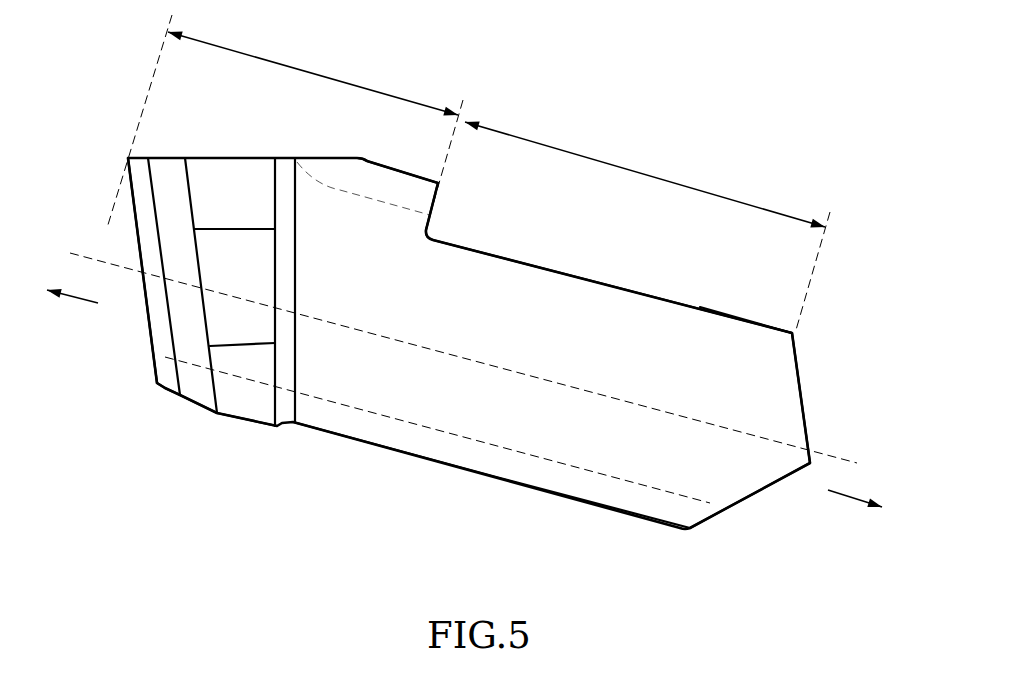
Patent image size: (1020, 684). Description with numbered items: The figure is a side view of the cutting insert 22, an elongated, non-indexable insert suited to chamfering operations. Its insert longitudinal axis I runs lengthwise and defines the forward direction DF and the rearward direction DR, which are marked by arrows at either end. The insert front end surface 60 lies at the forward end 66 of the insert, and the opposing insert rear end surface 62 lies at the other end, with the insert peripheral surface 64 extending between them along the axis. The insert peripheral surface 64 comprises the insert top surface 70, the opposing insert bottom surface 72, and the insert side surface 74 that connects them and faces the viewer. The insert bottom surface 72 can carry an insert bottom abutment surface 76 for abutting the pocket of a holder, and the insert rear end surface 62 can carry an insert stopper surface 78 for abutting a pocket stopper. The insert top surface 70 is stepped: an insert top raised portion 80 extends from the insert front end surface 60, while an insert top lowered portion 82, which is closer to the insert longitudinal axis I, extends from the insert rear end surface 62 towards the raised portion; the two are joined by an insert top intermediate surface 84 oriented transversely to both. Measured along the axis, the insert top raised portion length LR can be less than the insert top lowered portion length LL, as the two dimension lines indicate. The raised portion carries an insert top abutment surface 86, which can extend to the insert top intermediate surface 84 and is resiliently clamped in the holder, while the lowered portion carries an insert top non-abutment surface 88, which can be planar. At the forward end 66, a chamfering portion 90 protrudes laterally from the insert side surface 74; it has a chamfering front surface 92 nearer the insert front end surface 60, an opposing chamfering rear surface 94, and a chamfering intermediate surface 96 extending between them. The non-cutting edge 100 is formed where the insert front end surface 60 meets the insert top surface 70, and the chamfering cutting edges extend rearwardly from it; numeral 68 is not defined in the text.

The cutting insert 22 is at (772, 173).
The insert front end surface 60 is at (150, 328).
The insert rear end surface 62 is at (765, 490).
The insert peripheral surface 64 is at (600, 305).
The forward end 66 is at (190, 437).
The rear lower edge 68 is at (715, 527).
The insert top surface 70 is at (488, 252).
The insert bottom surface 72 is at (587, 505).
The insert side surface 74 is at (488, 432).
The insert bottom abutment surface 76 is at (418, 460).
The insert stopper surface 78 is at (802, 390).
The insert top raised portion 80 is at (255, 140).
The insert top lowered portion 82 is at (570, 265).
The insert top intermediate surface 84 is at (432, 220).
The insert top abutment surface 86 is at (407, 193).
The insert top non-abutment surface 88 is at (700, 310).
The chamfering portion 90 is at (193, 405).
The chamfering front surface 92 is at (187, 337).
The chamfering rear surface 94 is at (275, 275).
The chamfering intermediate surface 96 is at (248, 365).
The non-cutting edge 100 is at (128, 158).
The insert top raised portion length LR is at (305, 72).
The insert top lowered portion length LL is at (653, 170).
The insert longitudinal axis I is at (840, 457).
The forward direction DF is at (75, 315).
The rearward direction DR is at (854, 517).